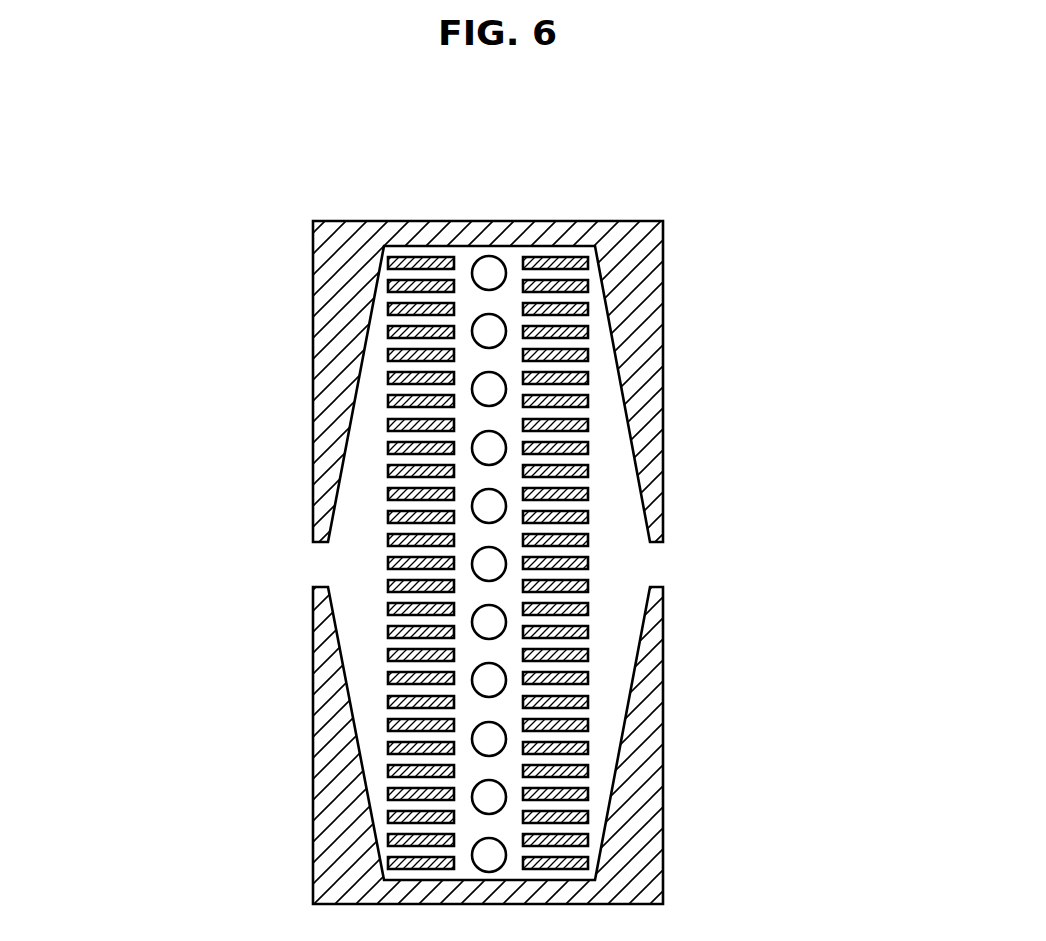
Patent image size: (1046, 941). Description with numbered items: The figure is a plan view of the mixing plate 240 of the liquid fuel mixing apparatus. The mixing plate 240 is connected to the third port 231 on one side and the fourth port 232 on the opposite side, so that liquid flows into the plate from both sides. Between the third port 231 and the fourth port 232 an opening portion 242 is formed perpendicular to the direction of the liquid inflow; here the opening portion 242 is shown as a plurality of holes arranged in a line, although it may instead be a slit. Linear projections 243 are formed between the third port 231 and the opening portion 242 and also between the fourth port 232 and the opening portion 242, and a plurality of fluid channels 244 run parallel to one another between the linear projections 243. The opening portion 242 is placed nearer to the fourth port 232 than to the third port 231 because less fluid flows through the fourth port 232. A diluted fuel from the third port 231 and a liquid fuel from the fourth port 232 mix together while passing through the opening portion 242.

The mixing plate 240 is at (712, 224).
The opening portion 242 is at (493, 274).
The linear projections 243 is at (388, 403).
The fluid channels 244 is at (565, 600).
The third port 231 is at (288, 564).
The fourth port 232 is at (687, 563).